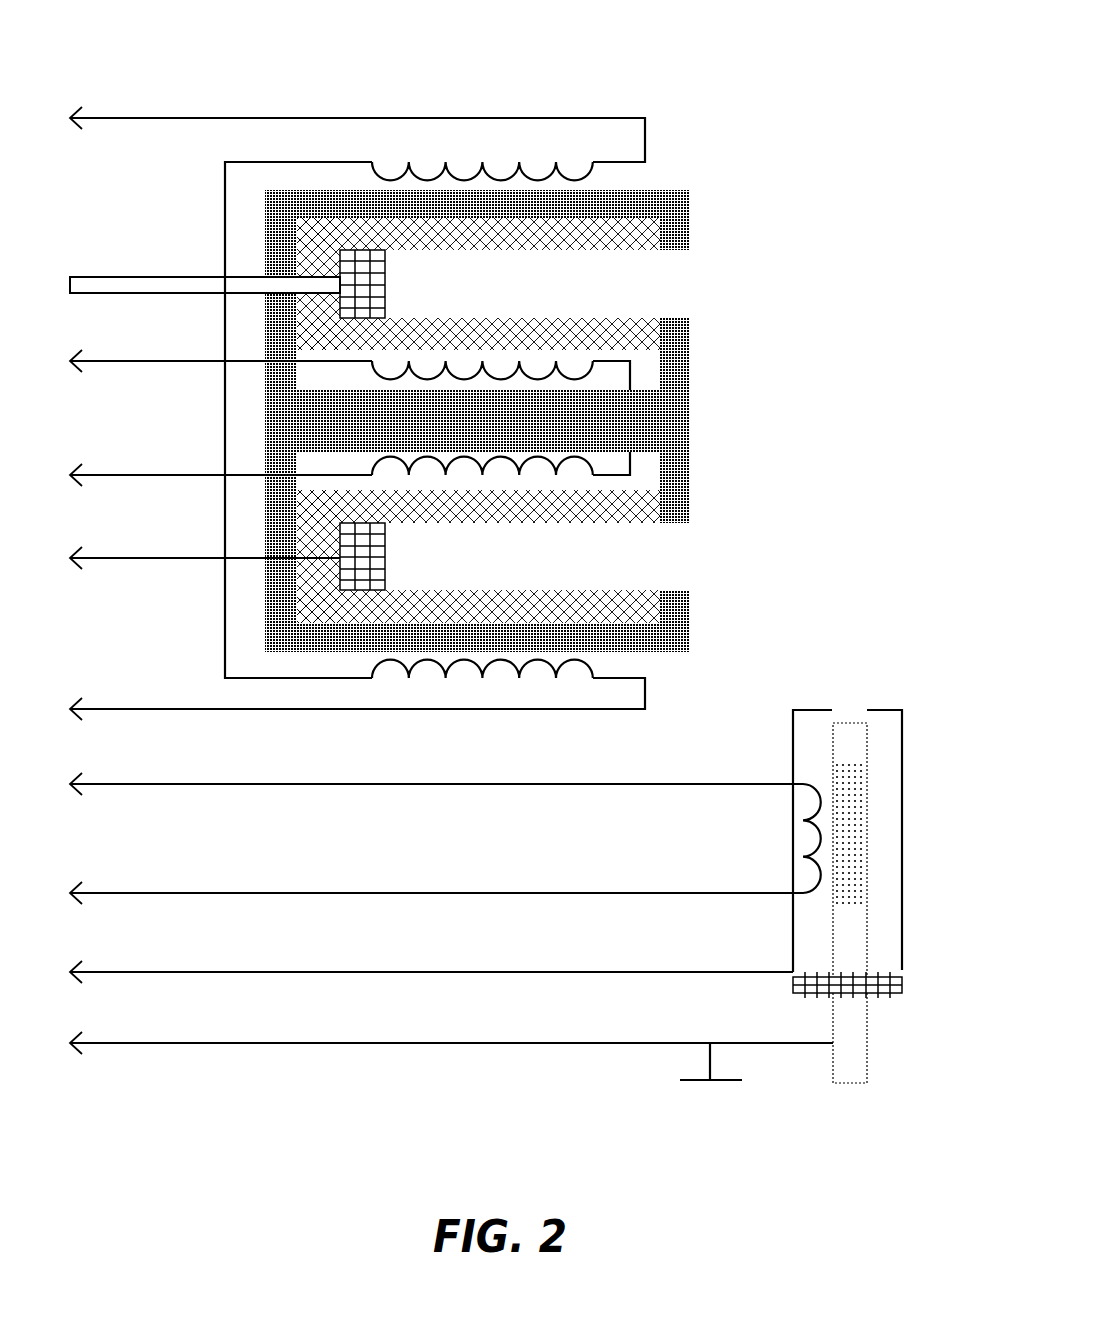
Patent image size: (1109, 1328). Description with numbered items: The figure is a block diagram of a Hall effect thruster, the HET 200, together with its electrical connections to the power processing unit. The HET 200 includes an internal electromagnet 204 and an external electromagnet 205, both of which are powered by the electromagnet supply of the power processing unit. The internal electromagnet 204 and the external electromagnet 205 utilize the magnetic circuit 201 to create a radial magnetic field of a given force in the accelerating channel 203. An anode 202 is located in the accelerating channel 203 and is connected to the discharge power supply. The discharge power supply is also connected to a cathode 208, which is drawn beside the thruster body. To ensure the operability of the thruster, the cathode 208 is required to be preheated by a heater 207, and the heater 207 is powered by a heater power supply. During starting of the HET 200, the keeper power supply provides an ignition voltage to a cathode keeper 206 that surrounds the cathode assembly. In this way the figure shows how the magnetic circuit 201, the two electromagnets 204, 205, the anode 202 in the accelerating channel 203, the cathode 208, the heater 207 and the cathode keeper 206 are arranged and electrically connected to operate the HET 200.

The HET 200 is at (528, 546).
The magnetic circuit 201 is at (688, 197).
The anode 202 is at (385, 292).
The accelerating channel 203 is at (615, 297).
The internal electromagnet 204 is at (583, 462).
The external electromagnet 205 is at (590, 660).
The cathode keeper 206 is at (805, 710).
The heater 207 is at (815, 783).
The cathode 208 is at (850, 952).